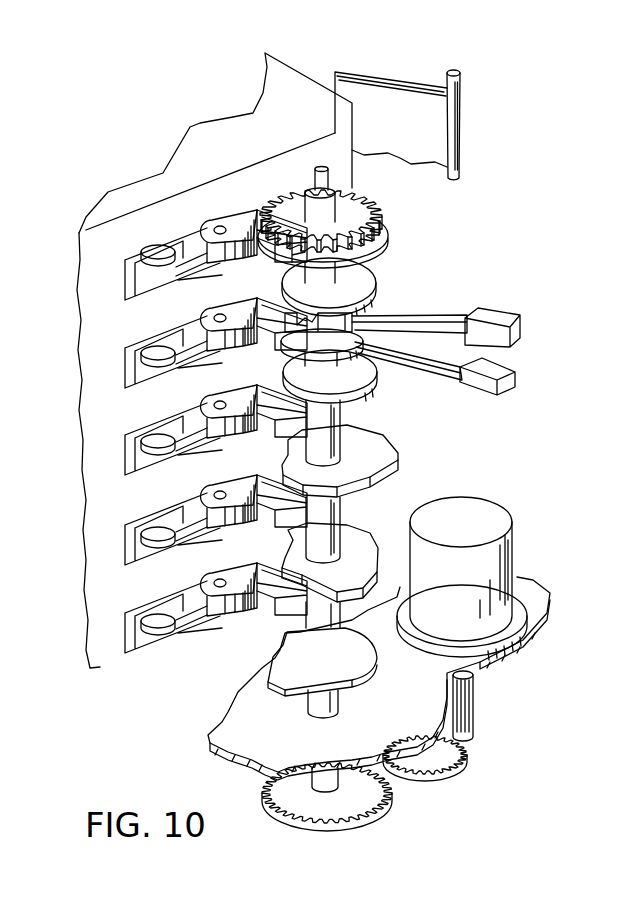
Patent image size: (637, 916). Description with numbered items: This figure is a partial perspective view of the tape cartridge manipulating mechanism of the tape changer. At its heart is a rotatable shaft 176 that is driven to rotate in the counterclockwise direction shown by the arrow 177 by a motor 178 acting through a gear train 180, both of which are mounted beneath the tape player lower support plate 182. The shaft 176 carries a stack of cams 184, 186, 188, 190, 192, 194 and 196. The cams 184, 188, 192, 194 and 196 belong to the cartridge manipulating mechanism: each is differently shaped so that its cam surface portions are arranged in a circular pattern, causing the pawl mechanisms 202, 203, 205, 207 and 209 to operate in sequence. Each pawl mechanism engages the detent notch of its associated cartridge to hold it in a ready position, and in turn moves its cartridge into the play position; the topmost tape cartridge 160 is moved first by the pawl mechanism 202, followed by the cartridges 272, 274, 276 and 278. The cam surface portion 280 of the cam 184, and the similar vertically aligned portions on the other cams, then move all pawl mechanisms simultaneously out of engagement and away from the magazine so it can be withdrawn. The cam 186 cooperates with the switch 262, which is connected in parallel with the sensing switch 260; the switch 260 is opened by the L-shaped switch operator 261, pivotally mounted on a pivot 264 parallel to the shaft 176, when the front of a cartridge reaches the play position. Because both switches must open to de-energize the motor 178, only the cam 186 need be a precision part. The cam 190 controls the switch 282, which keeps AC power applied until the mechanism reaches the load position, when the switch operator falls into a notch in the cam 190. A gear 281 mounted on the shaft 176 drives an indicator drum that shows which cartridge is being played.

The topmost tape cartridge 160 is at (132, 270).
The L-shaped switch operator 261 is at (366, 68).
The sensing switch 260 is at (396, 76).
The pivot 264 is at (462, 72).
The gear 281 is at (378, 205).
The cam 184 is at (366, 278).
The cam 186 is at (370, 314).
The switch 262 is at (512, 333).
The cam 190 is at (370, 358).
The cam 188 is at (362, 378).
The switch 282 is at (507, 381).
The cam 192 is at (399, 455).
The shaft 176 is at (330, 508).
The cam 194 is at (410, 523).
The motor 178 is at (513, 553).
The cam 196 is at (352, 683).
The gear train 180 is at (409, 792).
The arrow 177 is at (373, 835).
The tape player lower support plate 182 is at (222, 726).
The pawl mechanism 202 is at (230, 277).
The cam surface portion 280 is at (290, 274).
The pawl mechanism 203 is at (240, 360).
The pawl mechanism 205 is at (253, 447).
The pawl mechanism 207 is at (248, 543).
The pawl mechanism 209 is at (258, 632).
The tape cartridge 272 is at (128, 367).
The tape cartridge 274 is at (130, 455).
The tape cartridge 276 is at (130, 540).
The tape cartridge 278 is at (128, 642).